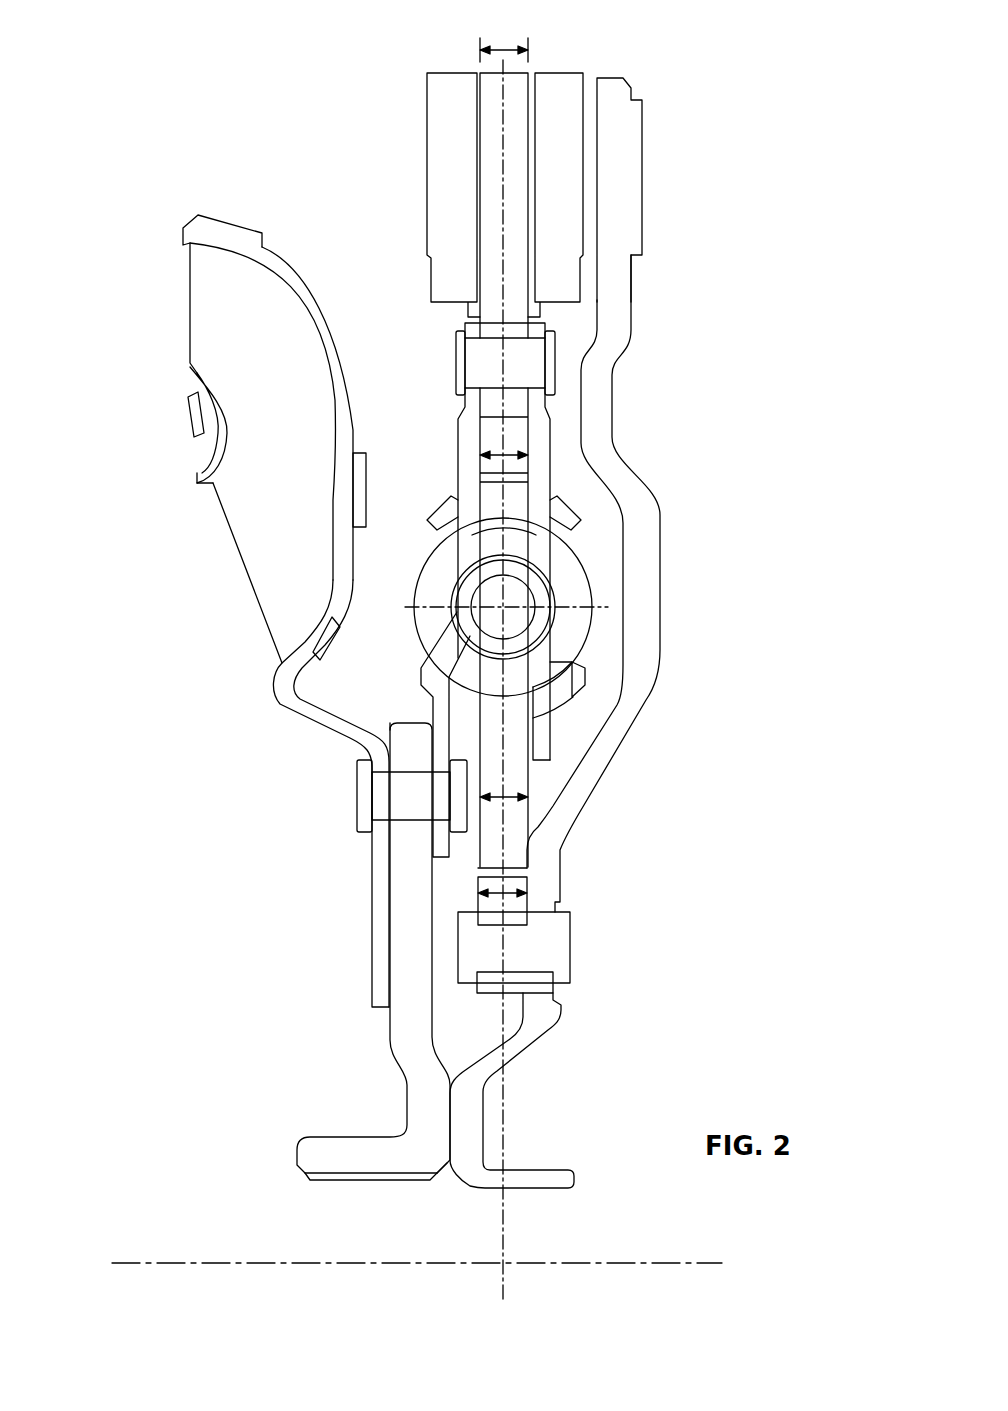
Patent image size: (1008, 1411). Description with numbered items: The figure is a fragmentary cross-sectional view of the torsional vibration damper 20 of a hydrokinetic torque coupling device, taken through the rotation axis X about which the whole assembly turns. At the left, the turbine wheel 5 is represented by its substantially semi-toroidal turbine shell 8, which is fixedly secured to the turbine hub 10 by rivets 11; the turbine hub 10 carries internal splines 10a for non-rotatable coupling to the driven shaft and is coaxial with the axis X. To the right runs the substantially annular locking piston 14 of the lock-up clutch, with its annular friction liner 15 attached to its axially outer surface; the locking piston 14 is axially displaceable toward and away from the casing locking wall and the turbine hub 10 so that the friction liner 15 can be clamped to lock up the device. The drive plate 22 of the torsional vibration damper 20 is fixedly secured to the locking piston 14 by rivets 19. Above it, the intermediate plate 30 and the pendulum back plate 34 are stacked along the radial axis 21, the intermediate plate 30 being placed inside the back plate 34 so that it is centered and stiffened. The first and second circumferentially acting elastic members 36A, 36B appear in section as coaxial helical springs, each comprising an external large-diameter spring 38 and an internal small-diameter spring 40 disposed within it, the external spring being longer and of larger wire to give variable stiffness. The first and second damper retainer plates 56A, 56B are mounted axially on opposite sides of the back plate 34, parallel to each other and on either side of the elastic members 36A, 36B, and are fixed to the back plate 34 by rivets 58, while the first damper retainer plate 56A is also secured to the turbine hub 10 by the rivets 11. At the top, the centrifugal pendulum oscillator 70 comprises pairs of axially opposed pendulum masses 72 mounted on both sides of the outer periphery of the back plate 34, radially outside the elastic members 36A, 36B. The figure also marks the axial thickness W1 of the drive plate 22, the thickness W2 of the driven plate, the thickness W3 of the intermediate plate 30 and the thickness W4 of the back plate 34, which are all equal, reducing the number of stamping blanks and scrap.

The turbine wheel 5 is at (286, 604).
The turbine shell 8 is at (303, 288).
The turbine hub 10 is at (361, 983).
The internal splines 10a is at (367, 1182).
The rivets 11 is at (403, 802).
The locking piston 14 is at (647, 617).
The friction liner 15 is at (645, 197).
The rivets 19 is at (558, 947).
The torsional vibration damper 20 is at (579, 581).
The radial axis 21 is at (507, 1223).
The drive plate 22 is at (489, 910).
The intermediate plate 30 is at (491, 431).
The pendulum back plate 34 is at (515, 233).
The first circumferentially acting elastic members 36A is at (593, 572).
The second circumferentially acting elastic members 36B is at (503, 607).
The external large-diameter spring 38 is at (579, 614).
The internal small-diameter spring 40 is at (467, 617).
The first damper retainer plate 56A is at (462, 473).
The second damper retainer plate 56B is at (540, 443).
The rivets 58 is at (525, 355).
The centrifugal pendulum oscillator 70 is at (514, 195).
The pendulum masses 72 is at (560, 158).
The thickness of the drive plate W1 is at (500, 887).
The thickness of the driven plate W2 is at (497, 793).
The thickness of the intermediate plate W3 is at (497, 447).
The thickness of the back plate W4 is at (502, 46).
The rotation axis X is at (400, 1274).